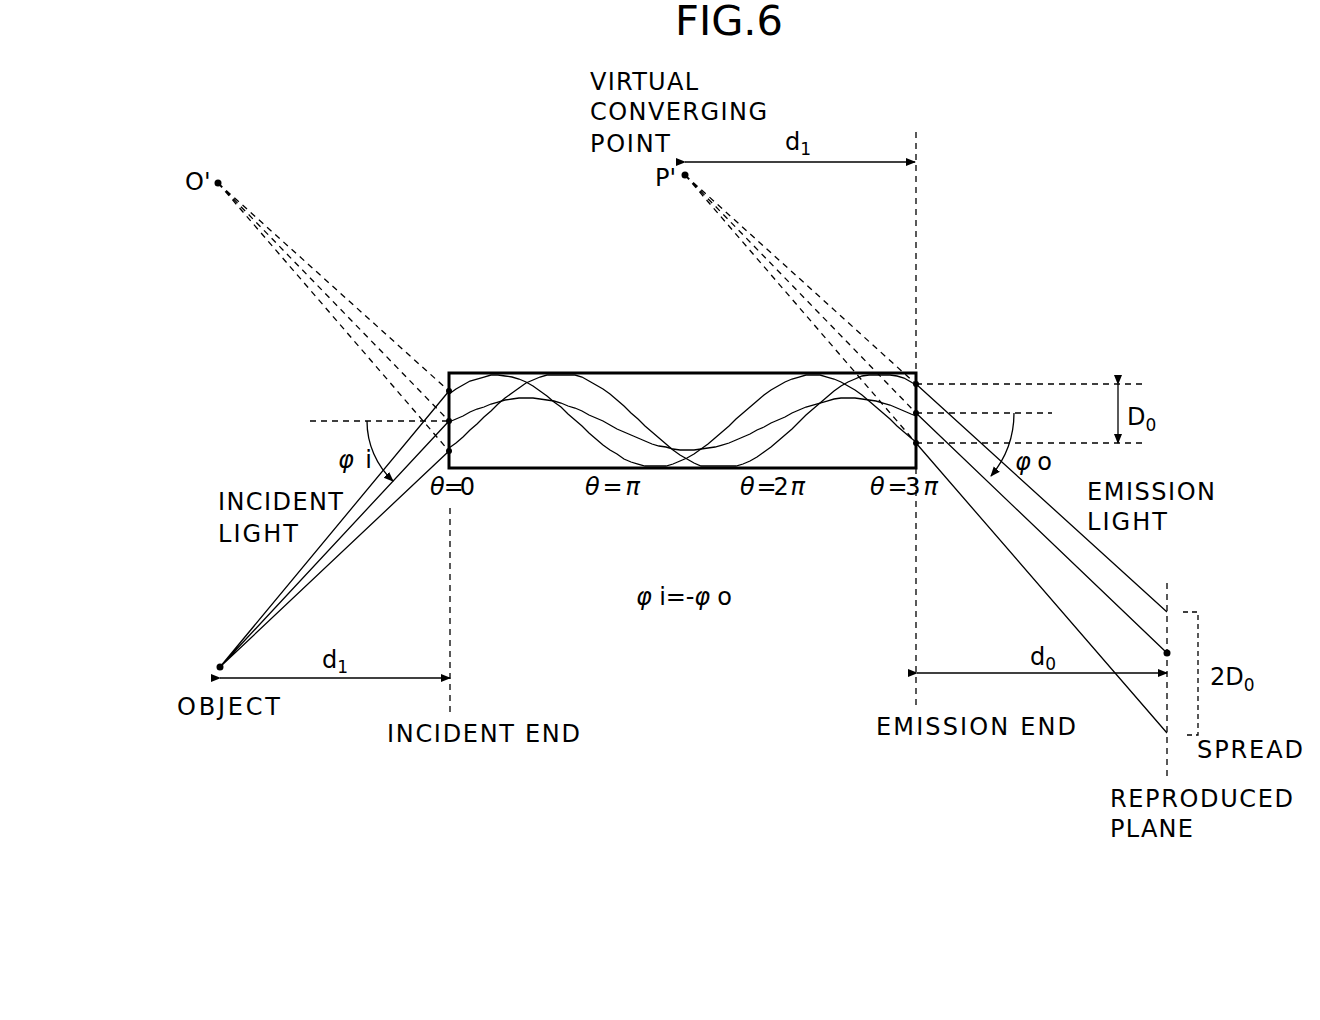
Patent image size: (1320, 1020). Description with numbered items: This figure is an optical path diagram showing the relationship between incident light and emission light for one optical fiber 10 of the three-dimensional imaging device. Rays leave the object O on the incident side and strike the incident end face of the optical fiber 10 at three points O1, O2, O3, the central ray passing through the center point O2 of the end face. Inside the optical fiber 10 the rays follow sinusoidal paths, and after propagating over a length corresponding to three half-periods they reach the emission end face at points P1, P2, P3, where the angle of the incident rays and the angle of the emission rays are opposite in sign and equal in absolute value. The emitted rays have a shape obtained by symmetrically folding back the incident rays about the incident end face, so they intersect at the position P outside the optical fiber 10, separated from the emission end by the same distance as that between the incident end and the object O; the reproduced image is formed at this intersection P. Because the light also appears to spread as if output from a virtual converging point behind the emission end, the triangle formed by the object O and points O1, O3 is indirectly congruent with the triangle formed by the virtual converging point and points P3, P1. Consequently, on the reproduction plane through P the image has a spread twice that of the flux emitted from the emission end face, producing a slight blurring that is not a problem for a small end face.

The optical fiber 10 is at (530, 374).
The incident end point O1 is at (449, 451).
The incident end point O2 is at (449, 421).
The incident end point O3 is at (449, 391).
The emission end point P1 is at (916, 443).
The emission end point P2 is at (916, 413).
The emission end point P3 is at (916, 384).
The object O is at (204, 667).
The reproduced image position P is at (1178, 655).